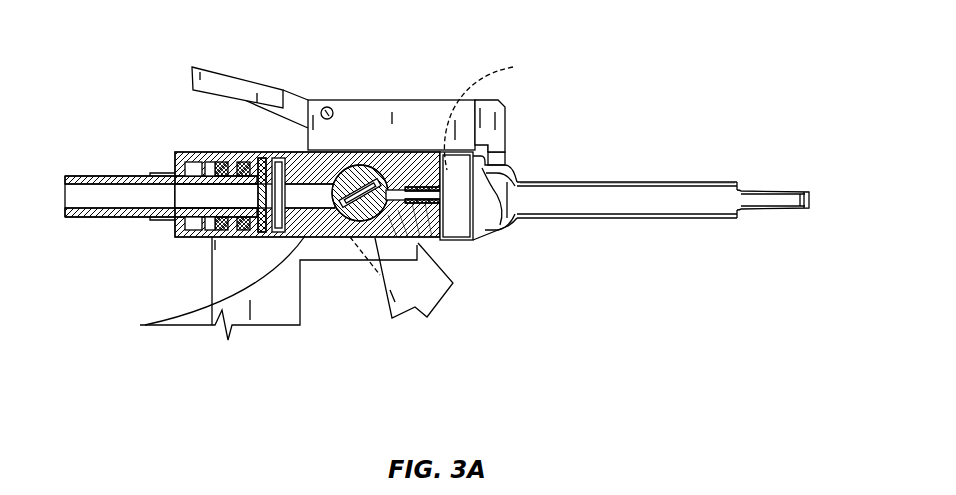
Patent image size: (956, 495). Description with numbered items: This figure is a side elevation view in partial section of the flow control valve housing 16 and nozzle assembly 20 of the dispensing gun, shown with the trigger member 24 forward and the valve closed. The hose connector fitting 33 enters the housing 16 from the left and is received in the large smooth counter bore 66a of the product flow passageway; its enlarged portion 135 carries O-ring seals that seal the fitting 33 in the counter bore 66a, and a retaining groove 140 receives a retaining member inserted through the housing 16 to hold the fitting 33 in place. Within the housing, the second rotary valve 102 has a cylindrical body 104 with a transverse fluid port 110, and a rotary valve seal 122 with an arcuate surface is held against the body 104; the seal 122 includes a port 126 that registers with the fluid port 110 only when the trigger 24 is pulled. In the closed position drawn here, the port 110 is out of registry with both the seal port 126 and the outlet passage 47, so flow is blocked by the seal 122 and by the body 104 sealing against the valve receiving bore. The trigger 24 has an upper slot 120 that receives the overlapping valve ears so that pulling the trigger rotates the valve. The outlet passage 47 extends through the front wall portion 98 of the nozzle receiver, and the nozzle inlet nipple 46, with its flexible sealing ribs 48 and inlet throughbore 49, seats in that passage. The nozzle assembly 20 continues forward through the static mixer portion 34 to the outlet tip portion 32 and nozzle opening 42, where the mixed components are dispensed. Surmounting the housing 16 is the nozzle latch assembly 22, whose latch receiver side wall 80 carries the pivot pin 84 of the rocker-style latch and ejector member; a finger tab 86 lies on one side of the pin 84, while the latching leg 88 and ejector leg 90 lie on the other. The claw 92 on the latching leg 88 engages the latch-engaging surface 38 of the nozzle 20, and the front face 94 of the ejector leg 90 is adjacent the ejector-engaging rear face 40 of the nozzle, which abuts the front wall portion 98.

The flow control valve housing 16 is at (186, 151).
The removable nozzle assembly 20 is at (613, 177).
The nozzle latch assembly 22 is at (205, 66).
The trigger member 24 is at (386, 265).
The outlet tip portion 32 is at (779, 210).
The hose connector fitting 33 is at (121, 176).
The static mixer portion 34 is at (611, 220).
The latch-engaging surface 38 is at (506, 163).
The ejector-engaging rear face 40 is at (458, 214).
The nozzle opening 42 is at (810, 199).
The nozzle inlet nipple 46 is at (406, 250).
The outlet passage 47 is at (396, 257).
The sealing ribs 48 is at (416, 243).
The inlet throughbore 49 is at (471, 211).
The counter bore 66a is at (197, 151).
The side wall 80 is at (378, 103).
The pivot pin 84 is at (332, 107).
The finger tab 86 is at (231, 72).
The latching leg 88 is at (496, 103).
The ejector leg 90 is at (514, 67).
The claw 92 is at (504, 151).
The front face 94 is at (477, 143).
The front wall portion 98 is at (428, 240).
The second rotary valve 102 is at (371, 184).
The cylindrical body 104 is at (362, 222).
The transverse fluid port 110 is at (346, 236).
The upper slot 120 is at (351, 240).
The rotary valve seal 122 is at (212, 294).
The port 126 is at (292, 151).
The enlarged portion 135 is at (206, 240).
The retaining groove 140 is at (183, 237).